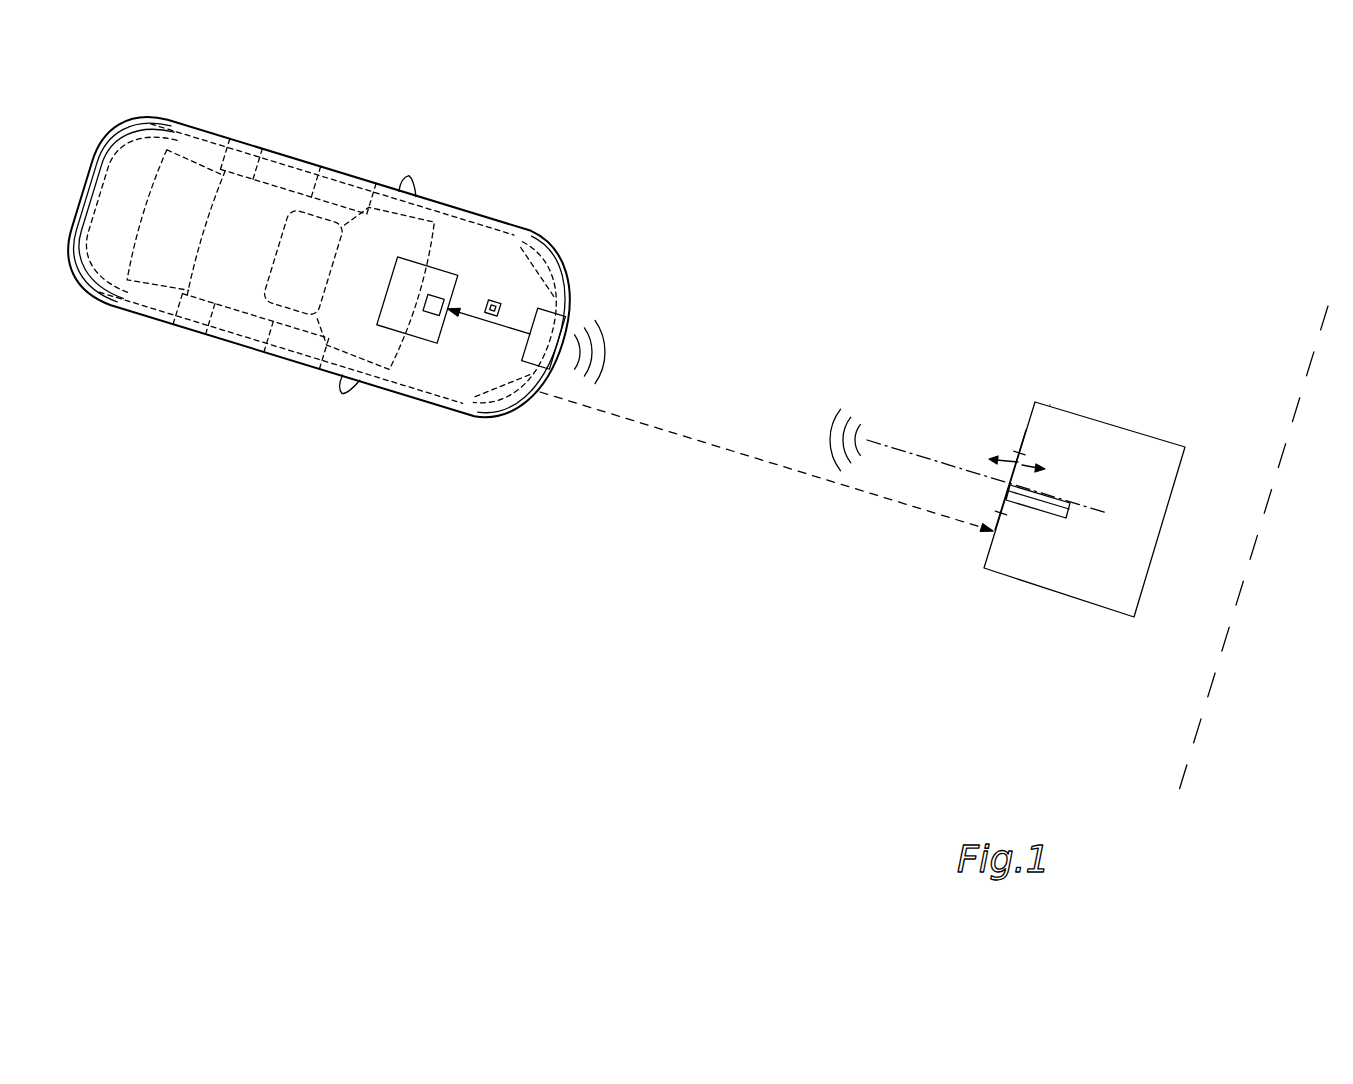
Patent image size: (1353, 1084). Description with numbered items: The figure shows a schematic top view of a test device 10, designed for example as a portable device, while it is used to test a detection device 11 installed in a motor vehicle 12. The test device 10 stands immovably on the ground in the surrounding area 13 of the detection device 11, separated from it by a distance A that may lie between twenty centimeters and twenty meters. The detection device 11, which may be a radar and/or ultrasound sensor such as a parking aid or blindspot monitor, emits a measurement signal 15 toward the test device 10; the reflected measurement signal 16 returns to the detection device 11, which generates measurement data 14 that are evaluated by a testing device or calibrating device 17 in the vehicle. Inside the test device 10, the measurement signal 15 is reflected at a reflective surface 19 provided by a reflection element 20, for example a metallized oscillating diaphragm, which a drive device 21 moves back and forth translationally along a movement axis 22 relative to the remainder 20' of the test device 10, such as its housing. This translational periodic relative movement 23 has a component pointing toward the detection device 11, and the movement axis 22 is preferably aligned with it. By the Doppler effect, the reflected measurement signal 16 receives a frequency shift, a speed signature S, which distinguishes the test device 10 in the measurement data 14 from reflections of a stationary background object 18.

The test device 10 is at (1120, 427).
The detection device 11 is at (555, 323).
The motor vehicle 12 is at (538, 243).
The surrounding area 13 is at (958, 349).
The measurement data 14 is at (494, 301).
The measurement signal 15 is at (607, 352).
The reflected measurement signal 16 is at (853, 405).
The testing device or calibrating device 17 is at (430, 262).
The other object 18 is at (1312, 356).
The reflective surface 19 is at (1012, 468).
The reflection element 20 is at (1056, 491).
The remainder of the test device 20' is at (1077, 381).
The drive device 21 is at (1057, 517).
The movement axis 22 is at (947, 465).
The translational periodic relative movement 23 is at (999, 459).
The distance A is at (720, 448).
The speed signature S is at (431, 316).